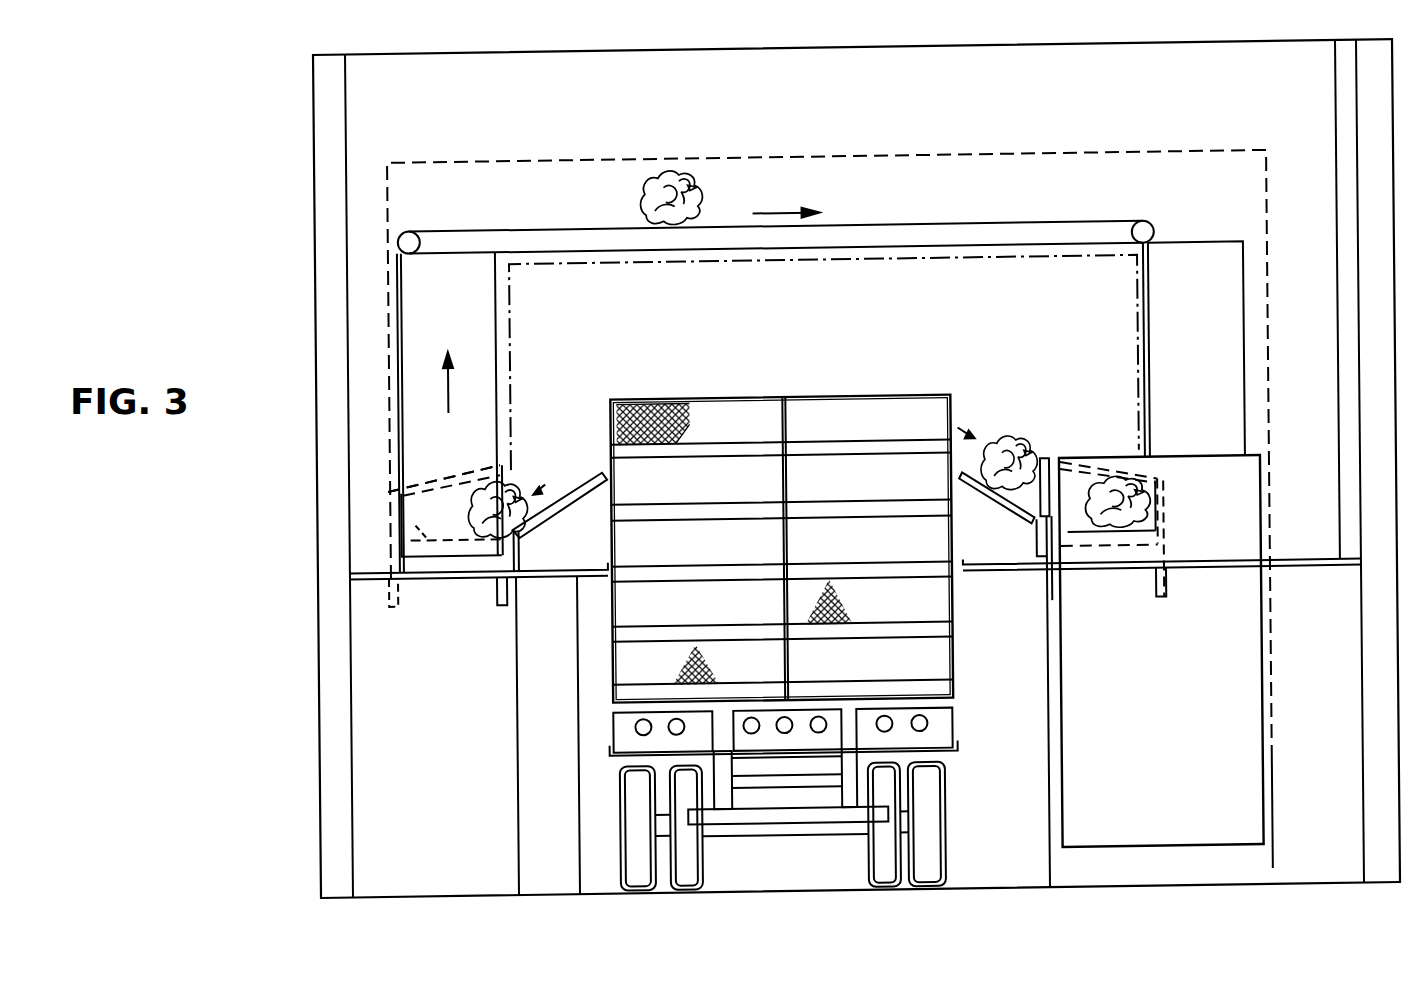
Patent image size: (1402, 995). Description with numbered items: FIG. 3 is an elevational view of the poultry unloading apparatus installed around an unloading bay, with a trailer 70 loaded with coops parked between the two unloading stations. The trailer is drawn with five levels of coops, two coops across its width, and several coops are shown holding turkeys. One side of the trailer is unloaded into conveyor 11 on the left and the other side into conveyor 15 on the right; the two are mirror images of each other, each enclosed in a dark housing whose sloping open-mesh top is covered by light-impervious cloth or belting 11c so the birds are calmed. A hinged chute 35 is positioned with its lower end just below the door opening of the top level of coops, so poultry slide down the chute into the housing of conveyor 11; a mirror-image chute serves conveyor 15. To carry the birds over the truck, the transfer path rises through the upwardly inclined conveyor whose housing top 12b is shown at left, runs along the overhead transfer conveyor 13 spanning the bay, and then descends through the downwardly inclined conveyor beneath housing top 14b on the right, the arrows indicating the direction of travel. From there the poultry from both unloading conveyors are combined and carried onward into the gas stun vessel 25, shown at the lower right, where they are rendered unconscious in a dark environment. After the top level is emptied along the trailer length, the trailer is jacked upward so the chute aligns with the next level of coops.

The conveyor 11 is at (397, 519).
The light impervious cloth or belting 11c is at (426, 486).
The top of conveyor housing 12b is at (475, 317).
The transfer conveyor 13 is at (851, 231).
The top of conveyor housing 14b is at (1196, 390).
The conveyor 15 is at (1161, 519).
The gas stun vessel 25 is at (1241, 813).
The chute 35 is at (594, 497).
The trailer 70 is at (768, 621).